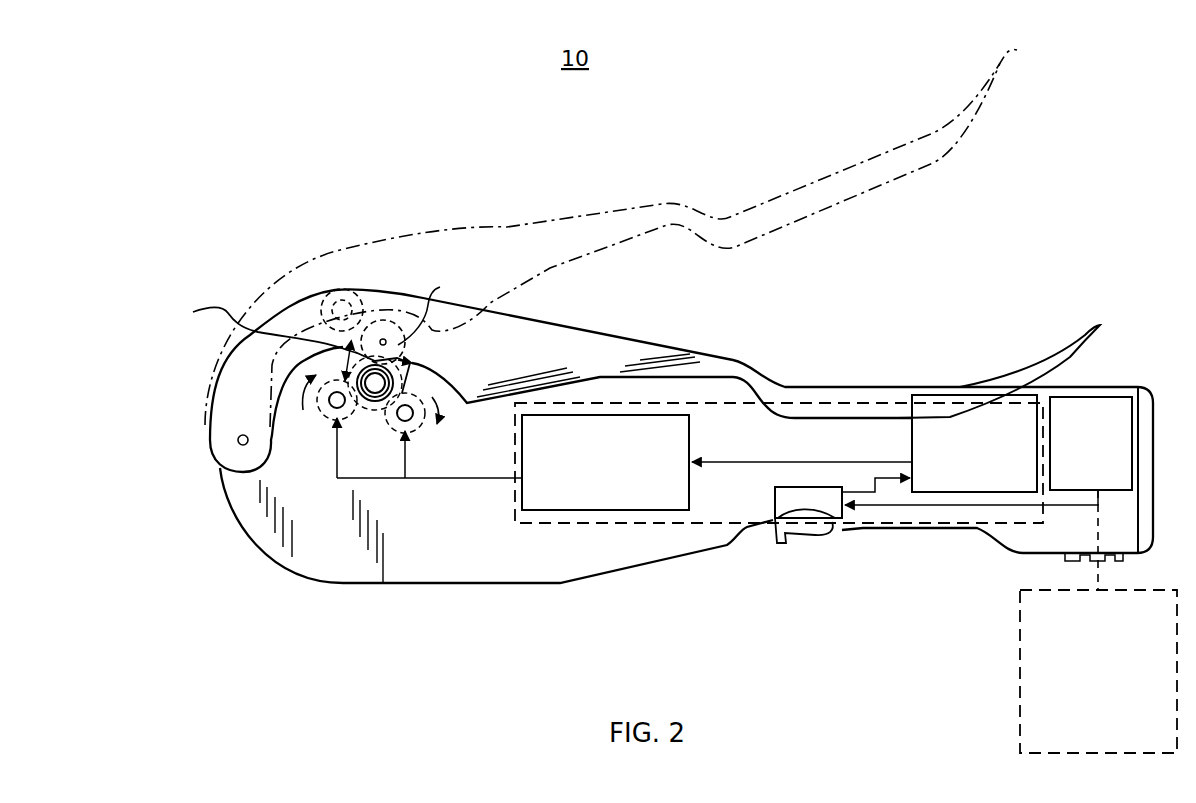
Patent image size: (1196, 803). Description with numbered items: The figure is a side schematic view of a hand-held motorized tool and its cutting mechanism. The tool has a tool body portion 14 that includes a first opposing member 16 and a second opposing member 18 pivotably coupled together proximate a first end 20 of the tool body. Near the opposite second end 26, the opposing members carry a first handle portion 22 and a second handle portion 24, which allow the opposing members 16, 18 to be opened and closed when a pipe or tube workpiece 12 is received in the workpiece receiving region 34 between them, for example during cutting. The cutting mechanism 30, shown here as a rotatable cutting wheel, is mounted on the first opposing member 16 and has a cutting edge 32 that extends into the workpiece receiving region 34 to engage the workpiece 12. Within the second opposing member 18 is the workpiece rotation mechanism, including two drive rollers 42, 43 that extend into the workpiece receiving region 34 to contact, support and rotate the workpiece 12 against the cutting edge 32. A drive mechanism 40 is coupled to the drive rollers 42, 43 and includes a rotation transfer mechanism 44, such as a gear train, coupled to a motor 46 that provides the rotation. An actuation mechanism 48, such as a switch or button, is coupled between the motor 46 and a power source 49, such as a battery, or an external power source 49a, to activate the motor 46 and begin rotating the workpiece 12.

The workpiece 12 is at (410, 359).
The tool body portion 14 is at (578, 586).
The first opposing member 16 is at (548, 333).
The second opposing member 18 is at (630, 383).
The first end 20 is at (200, 485).
The first handle portion 22 is at (857, 387).
The second handle portion 24 is at (913, 532).
The second end 26 is at (1065, 300).
The cutting mechanism 30 is at (440, 287).
The cutting edge 32 is at (403, 350).
The workpiece receiving region 34 is at (256, 327).
The drive mechanism 40 is at (555, 523).
The drive roller 42 is at (334, 412).
The drive roller 43 is at (396, 425).
The rotation transfer mechanism 44 is at (605, 462).
The motor 46 is at (864, 443).
The actuation mechanism 48 is at (788, 495).
The power source 49 is at (988, 451).
The external power source 49a is at (1098, 621).